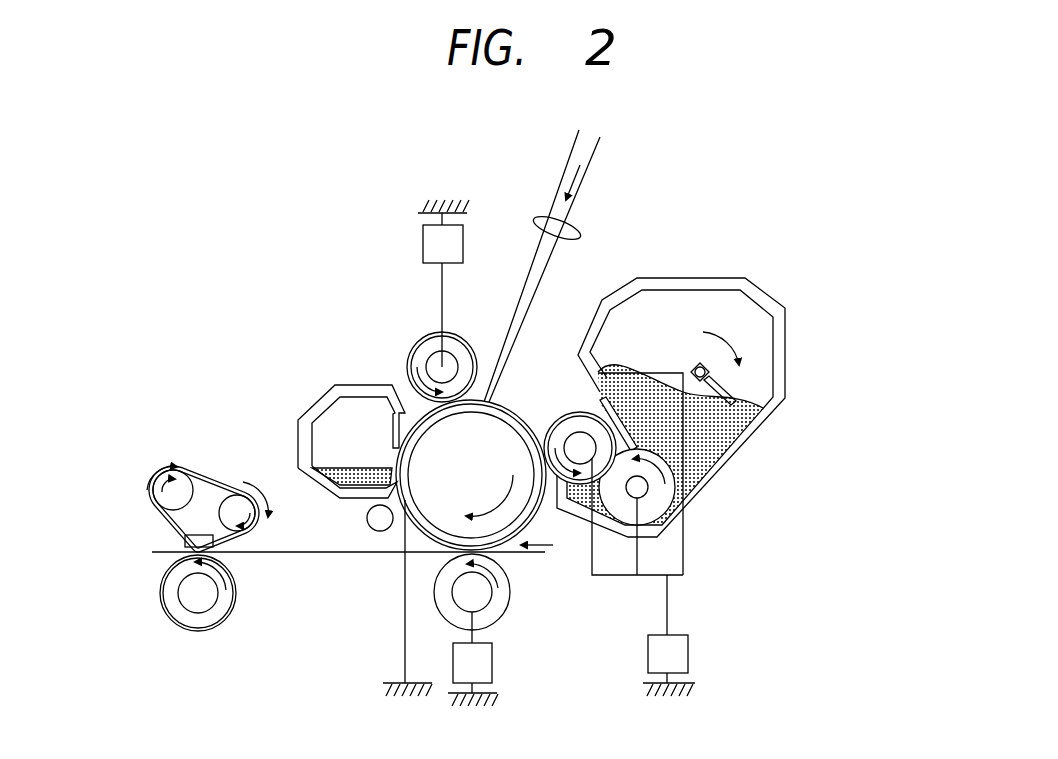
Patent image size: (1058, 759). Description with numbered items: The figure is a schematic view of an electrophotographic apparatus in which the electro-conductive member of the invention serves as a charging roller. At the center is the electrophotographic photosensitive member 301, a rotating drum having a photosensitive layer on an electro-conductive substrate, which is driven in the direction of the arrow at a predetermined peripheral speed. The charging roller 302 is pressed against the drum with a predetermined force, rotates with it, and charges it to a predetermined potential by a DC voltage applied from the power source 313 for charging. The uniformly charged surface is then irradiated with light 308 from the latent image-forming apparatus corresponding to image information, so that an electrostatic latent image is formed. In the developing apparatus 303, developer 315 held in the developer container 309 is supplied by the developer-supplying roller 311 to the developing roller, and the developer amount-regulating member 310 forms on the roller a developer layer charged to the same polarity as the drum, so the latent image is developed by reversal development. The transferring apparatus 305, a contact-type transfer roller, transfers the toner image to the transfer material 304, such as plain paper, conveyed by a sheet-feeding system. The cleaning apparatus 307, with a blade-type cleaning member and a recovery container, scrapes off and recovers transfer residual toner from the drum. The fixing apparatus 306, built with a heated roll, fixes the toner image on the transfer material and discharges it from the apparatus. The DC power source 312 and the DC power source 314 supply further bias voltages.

The electrophotographic photosensitive member 301 is at (497, 552).
The charging roller 302 is at (422, 352).
The developing apparatus 303 is at (568, 497).
The transfer material 304 is at (320, 555).
The transferring apparatus 305 is at (493, 612).
The fixing apparatus 306 is at (210, 480).
The cleaning apparatus 307 is at (393, 440).
The latent image-forming apparatus 308 is at (548, 218).
The developer container 309 is at (716, 393).
The developer amount-regulating member 310 is at (600, 402).
The developer-supplying roller 311 is at (660, 495).
The DC power source 312 is at (688, 655).
The power source for charging 313 is at (422, 247).
The DC power source 314 is at (492, 665).
The developer 315 is at (740, 433).